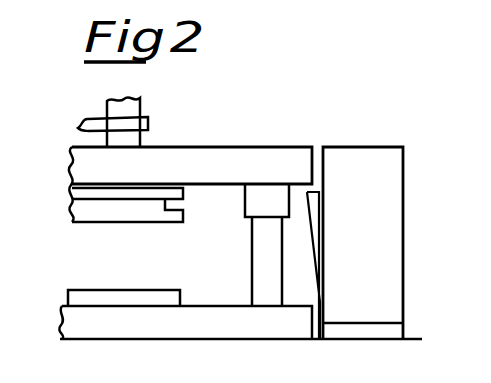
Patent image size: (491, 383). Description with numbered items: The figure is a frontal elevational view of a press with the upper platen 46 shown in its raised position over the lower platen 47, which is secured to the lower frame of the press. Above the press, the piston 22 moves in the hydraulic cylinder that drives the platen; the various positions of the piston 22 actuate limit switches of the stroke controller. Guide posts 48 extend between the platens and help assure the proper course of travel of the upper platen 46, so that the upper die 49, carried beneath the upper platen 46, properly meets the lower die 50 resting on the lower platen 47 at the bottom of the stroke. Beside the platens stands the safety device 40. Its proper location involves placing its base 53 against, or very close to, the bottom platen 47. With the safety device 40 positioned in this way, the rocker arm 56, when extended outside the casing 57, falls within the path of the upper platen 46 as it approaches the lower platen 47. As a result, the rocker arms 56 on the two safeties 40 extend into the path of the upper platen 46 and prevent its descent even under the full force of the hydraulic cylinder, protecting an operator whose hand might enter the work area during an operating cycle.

The piston 22 is at (133, 108).
The safety device 40 is at (406, 246).
The upper platen 46 is at (208, 176).
The lower platen 47 is at (280, 327).
The guide posts 48 is at (252, 251).
The upper die 49 is at (157, 217).
The lower die 50 is at (130, 293).
The base 53 is at (395, 326).
The rocker arm 56 is at (315, 227).
The casing 57 is at (398, 206).